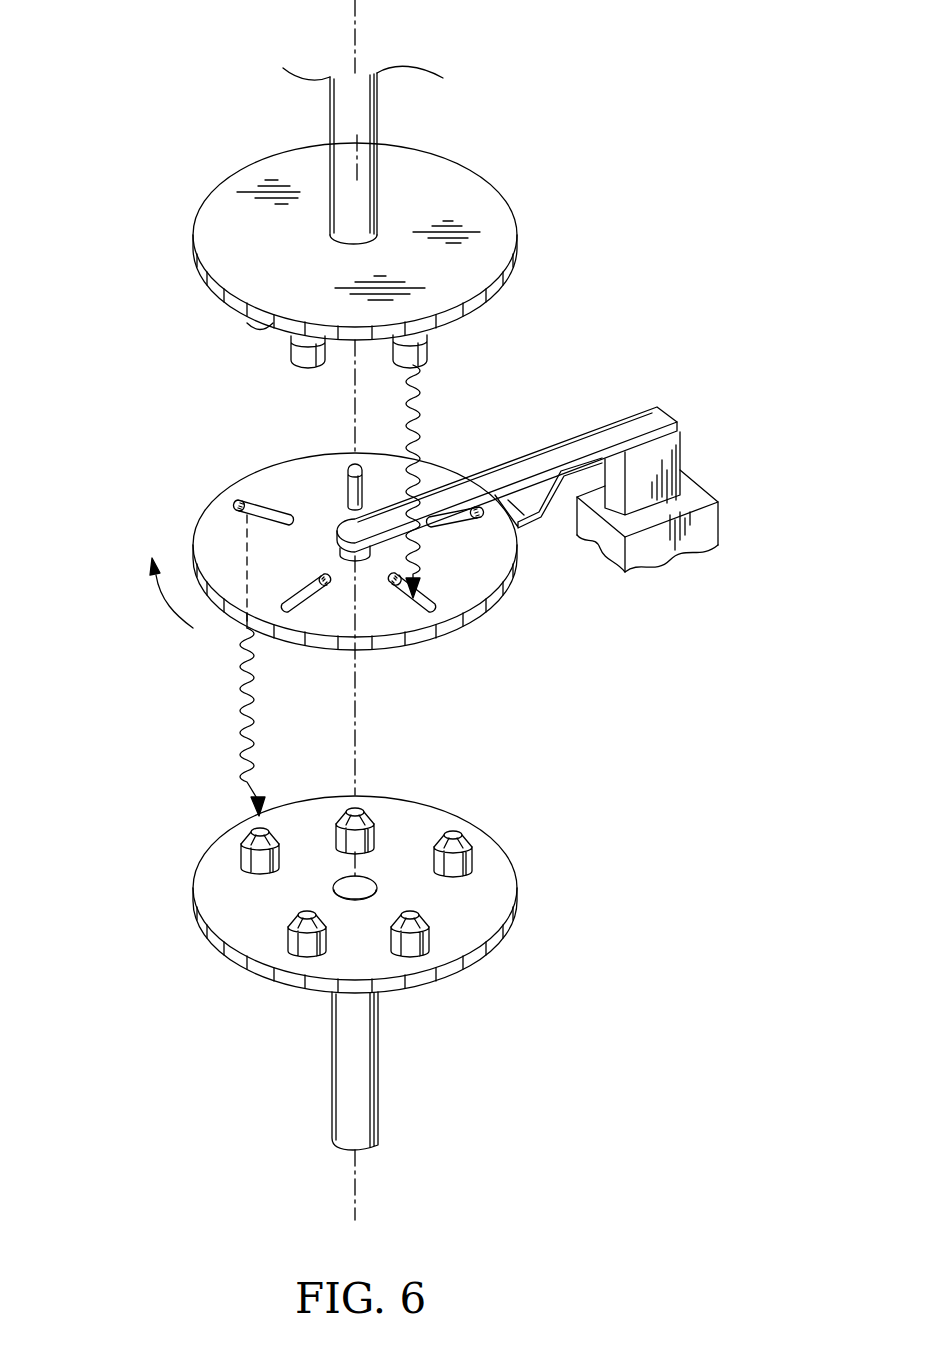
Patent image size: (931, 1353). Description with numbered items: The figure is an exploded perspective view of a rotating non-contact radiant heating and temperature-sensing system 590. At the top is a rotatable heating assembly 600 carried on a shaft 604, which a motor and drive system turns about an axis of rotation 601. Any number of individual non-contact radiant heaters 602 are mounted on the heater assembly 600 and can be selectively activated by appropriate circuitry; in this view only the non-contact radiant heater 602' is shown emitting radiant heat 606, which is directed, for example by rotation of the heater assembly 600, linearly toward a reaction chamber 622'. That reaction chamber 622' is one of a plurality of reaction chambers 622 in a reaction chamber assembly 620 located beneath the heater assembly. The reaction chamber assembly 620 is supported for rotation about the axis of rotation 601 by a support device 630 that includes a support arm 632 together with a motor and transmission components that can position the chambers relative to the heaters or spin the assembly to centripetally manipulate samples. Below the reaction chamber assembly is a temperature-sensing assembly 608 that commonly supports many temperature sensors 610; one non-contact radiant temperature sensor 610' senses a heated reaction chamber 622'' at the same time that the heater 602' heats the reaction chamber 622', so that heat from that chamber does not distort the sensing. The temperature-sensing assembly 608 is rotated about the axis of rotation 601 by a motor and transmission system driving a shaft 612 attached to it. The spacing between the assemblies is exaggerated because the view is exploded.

The non-contact radiant heating and temperature-sensing system 590 is at (136, 242).
The rotatable heating assembly 600 is at (497, 203).
The axis of rotation 601 is at (372, 732).
The non-contact radiant heater 602 is at (232, 345).
The non-contact radiant heater 602' is at (469, 349).
The shaft 604 is at (380, 118).
The radiant heat 606 is at (424, 418).
The temperature-sensing assembly 608 is at (497, 907).
The temperature sensor 610 is at (380, 890).
The non-contact radiant temperature sensor 610' is at (196, 847).
The shaft 612 is at (378, 1083).
The reaction chamber assembly 620 is at (485, 582).
The reaction chamber 622 is at (399, 568).
The reaction chamber 622' is at (460, 632).
The heated reaction chamber 622'' is at (201, 506).
The support device 630 is at (697, 432).
The support arm 632 is at (588, 438).